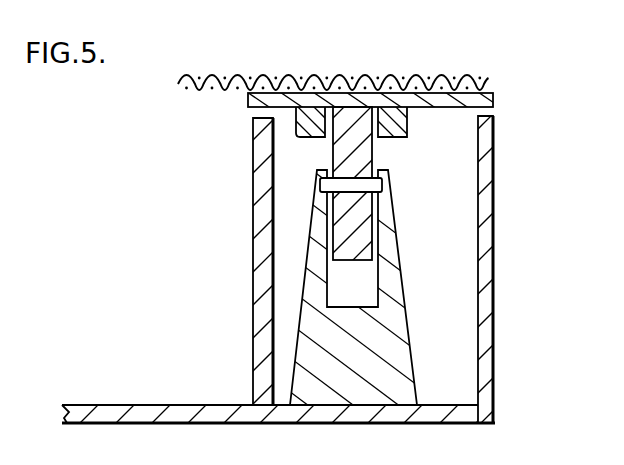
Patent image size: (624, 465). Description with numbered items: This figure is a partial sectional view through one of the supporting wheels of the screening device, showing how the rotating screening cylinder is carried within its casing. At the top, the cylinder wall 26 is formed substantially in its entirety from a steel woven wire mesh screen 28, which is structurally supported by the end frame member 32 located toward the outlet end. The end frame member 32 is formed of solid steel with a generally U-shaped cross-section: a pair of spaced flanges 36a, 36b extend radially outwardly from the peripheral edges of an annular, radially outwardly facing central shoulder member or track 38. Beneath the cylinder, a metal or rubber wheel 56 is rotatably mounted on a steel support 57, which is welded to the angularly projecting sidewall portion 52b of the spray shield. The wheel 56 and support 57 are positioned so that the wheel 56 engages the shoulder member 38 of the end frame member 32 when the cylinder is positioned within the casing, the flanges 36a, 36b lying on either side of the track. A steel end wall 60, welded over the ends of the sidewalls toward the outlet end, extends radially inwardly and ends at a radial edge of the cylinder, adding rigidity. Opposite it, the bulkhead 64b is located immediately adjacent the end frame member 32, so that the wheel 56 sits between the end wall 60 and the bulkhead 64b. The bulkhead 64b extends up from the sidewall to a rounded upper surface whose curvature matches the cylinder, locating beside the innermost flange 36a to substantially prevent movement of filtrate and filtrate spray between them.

The wire mesh screen 28 is at (208, 75).
The cylinder wall 26 is at (235, 94).
The end frame member 32 is at (501, 103).
The shoulder member 38 is at (373, 108).
The innermost flange 36a is at (300, 120).
The flange 36b is at (407, 137).
The bulkhead 64b is at (262, 262).
The end wall 60 is at (494, 243).
The wheel 56 is at (365, 247).
The steel support 57 is at (360, 382).
The sidewall portion 52b is at (148, 405).